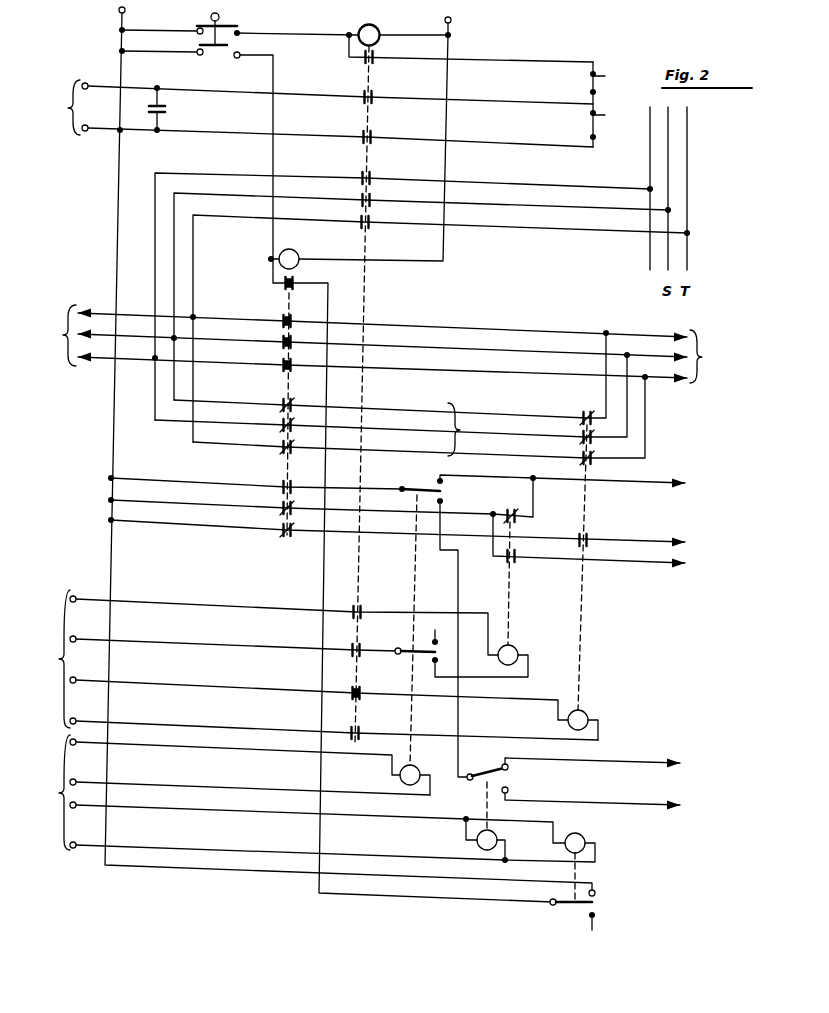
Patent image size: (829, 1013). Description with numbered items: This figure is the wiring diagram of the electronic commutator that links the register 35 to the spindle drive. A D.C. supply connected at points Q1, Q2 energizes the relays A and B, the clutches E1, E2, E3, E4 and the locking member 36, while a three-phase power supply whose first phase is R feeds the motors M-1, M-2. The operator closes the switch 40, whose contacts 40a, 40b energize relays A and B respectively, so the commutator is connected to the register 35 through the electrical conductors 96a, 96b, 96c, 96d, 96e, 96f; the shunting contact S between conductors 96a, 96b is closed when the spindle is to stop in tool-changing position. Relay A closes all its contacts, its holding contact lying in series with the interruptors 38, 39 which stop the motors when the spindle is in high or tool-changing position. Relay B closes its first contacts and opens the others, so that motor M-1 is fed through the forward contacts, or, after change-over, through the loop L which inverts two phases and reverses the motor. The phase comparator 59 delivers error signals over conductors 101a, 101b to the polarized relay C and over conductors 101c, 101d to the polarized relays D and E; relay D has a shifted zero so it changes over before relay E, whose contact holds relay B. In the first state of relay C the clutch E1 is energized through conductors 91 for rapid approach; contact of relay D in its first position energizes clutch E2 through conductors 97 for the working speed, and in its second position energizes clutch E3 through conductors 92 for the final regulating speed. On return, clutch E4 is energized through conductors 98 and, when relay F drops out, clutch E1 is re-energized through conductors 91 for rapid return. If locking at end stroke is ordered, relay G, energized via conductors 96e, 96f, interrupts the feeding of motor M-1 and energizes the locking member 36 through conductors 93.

The register 35 is at (58, 404).
The locking member 36 is at (692, 543).
The contact 38 is at (602, 126).
The contact 39 is at (602, 86).
The switch 40 is at (208, 18).
The contact 40a is at (248, 28).
The contact 40b is at (228, 52).
The phase comparator 59 is at (54, 792).
The electrical conductors 91 is at (646, 486).
The electrical conductors 92 is at (636, 810).
The electrical conductors 93 is at (662, 540).
The electrical conductor 96a is at (254, 90).
The electrical conductor 96b is at (254, 132).
The electrical conductor 96c is at (228, 604).
The electrical conductor 96d is at (224, 644).
The electrical conductor 96e is at (224, 685).
The electrical conductor 96f is at (214, 726).
The electrical conductors 97 is at (608, 770).
The electrical conductors 98 is at (656, 572).
The electrical conductor 101a is at (145, 750).
The electrical conductor 101b is at (248, 786).
The electrical conductor 101c is at (138, 810).
The electrical conductor 101d is at (244, 848).
The relay A is at (380, 28).
The relay B is at (296, 251).
The polarized relay C is at (416, 768).
The polarized relay D is at (470, 842).
The polarized relay E is at (583, 836).
The relay F is at (514, 647).
The relay G is at (585, 713).
The shunting contact S is at (163, 109).
The loop L is at (459, 429).
The supply point Q1 is at (356, 454).
The supply point Q2 is at (389, 139).
The motor M-1 is at (701, 356).
The motor M-2 is at (55, 348).
The clutch E1 is at (689, 487).
The clutch E2 is at (686, 766).
The clutch E3 is at (686, 806).
The clutch E4 is at (689, 566).
The power supply phase R is at (648, 203).